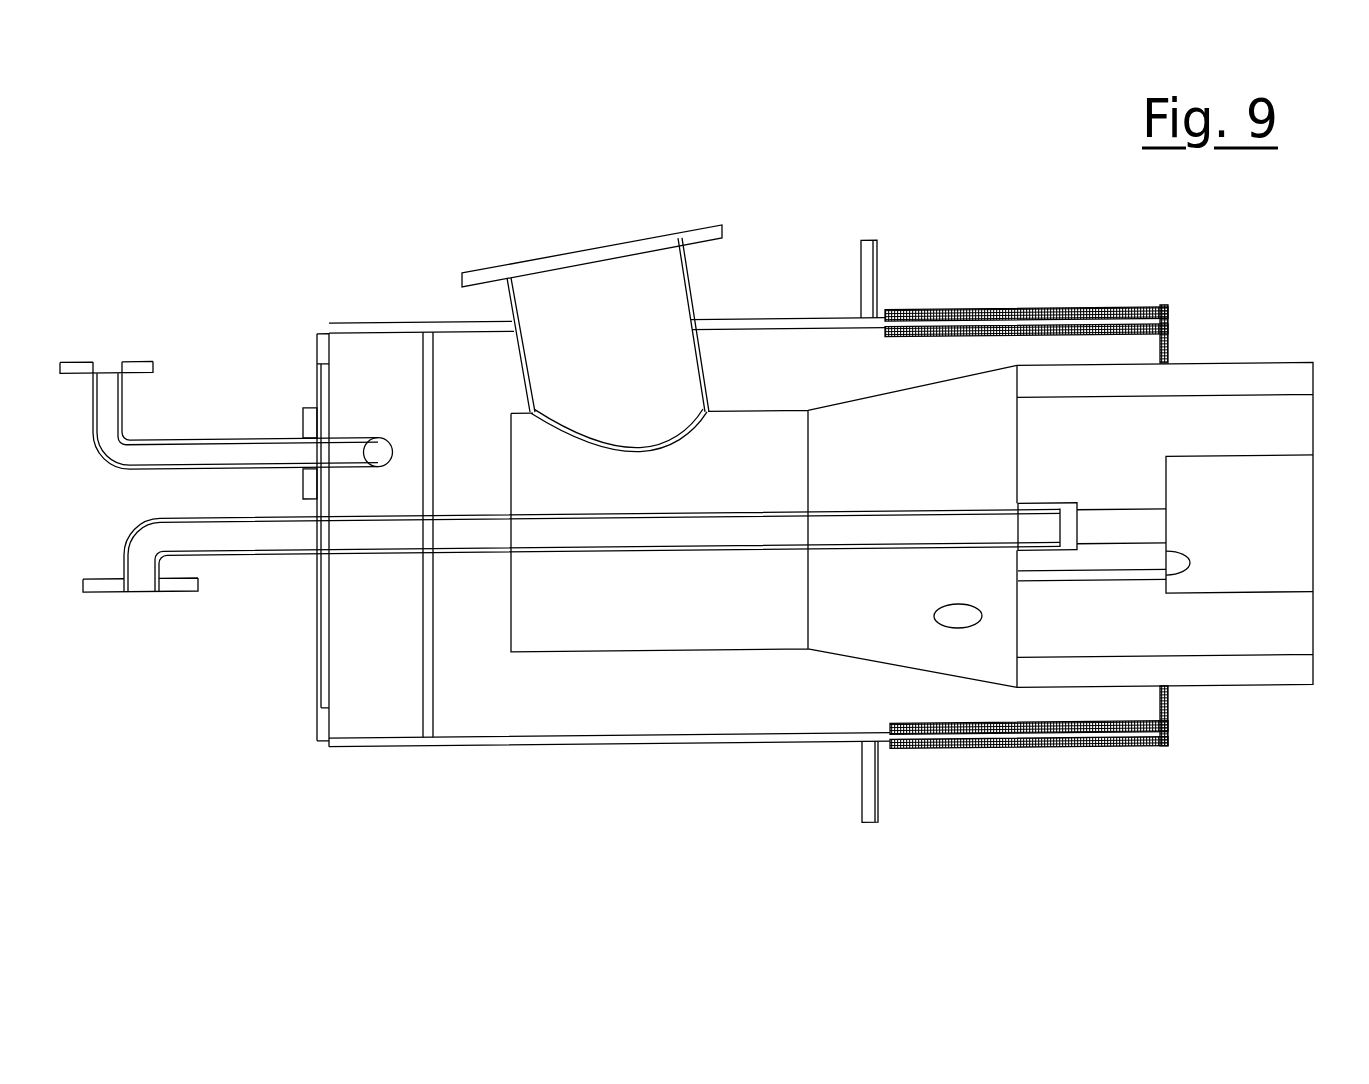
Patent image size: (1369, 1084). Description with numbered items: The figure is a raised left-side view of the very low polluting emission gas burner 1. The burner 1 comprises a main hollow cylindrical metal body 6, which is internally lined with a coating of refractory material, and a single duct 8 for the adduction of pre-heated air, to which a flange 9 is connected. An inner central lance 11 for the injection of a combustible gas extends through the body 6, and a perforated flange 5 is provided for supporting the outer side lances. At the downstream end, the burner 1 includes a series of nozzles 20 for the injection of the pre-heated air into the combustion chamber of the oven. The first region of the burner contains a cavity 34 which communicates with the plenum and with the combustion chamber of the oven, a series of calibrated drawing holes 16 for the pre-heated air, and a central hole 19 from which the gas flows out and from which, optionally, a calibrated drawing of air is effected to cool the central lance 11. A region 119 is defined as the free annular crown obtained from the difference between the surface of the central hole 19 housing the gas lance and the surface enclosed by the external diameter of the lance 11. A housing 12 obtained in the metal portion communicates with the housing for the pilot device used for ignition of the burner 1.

The gas burner 1 is at (778, 821).
The perforated flange 5 is at (872, 257).
The main hollow cylindrical metal body 6 is at (492, 745).
The duct 8 is at (660, 312).
The flange 9 is at (702, 240).
The inner central lance 11 is at (628, 541).
The housing 12 is at (962, 627).
The calibrated drawing holes 16 is at (1110, 586).
The central hole 19 is at (1112, 534).
The nozzles 20 is at (1187, 397).
The cavity 34 is at (1235, 577).
The annular crown region 119 is at (1043, 558).